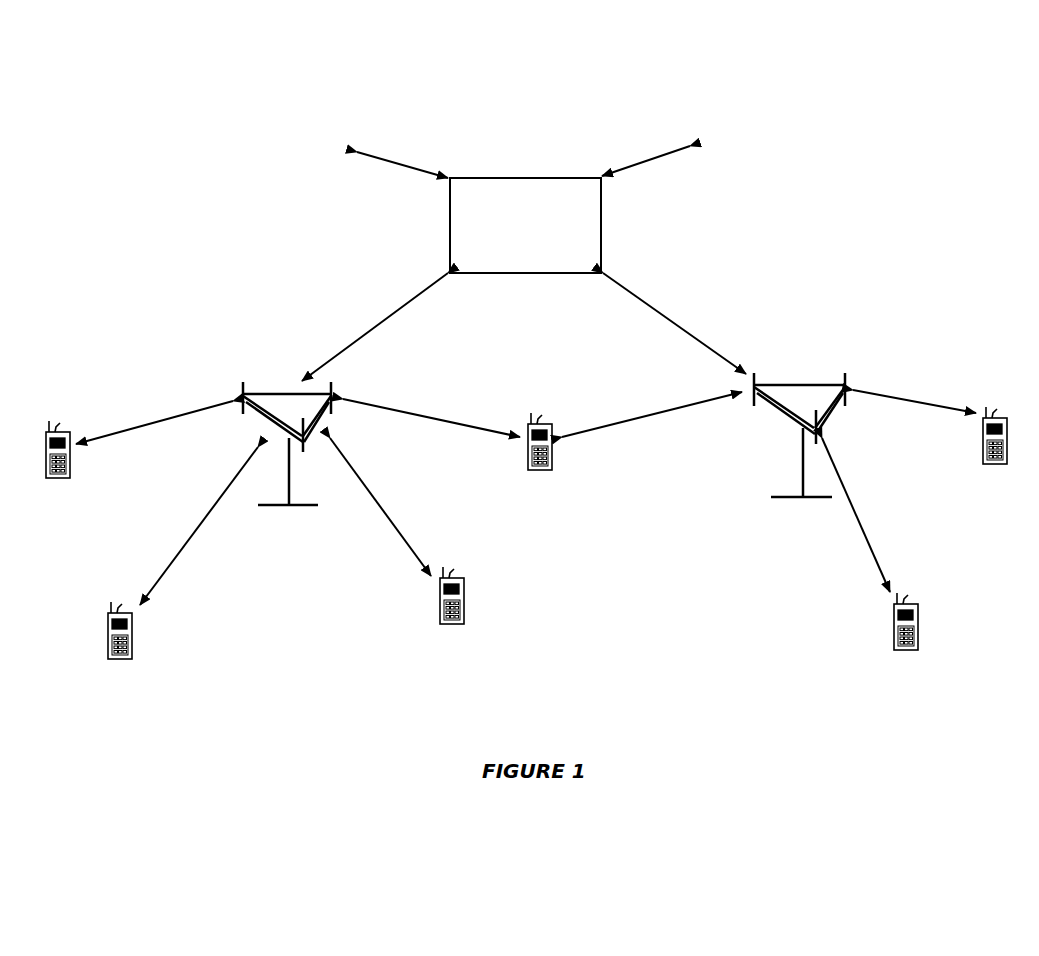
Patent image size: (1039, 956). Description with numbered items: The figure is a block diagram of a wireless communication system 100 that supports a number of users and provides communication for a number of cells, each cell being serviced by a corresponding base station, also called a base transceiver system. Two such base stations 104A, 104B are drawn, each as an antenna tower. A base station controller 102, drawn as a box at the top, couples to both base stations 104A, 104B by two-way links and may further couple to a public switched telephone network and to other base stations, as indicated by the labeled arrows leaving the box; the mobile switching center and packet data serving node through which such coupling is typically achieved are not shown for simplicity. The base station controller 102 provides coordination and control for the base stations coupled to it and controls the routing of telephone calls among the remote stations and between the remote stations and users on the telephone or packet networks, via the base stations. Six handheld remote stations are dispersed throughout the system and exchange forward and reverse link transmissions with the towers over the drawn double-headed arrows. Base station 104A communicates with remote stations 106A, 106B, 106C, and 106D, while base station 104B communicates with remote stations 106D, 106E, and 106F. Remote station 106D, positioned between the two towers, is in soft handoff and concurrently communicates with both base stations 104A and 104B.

The wireless communication system 100 is at (924, 92).
The base station controller 102 is at (519, 177).
The base station 104A is at (277, 392).
The base station 104B is at (811, 384).
The remote station 106A is at (60, 439).
The remote station 106B is at (108, 621).
The remote station 106C is at (456, 587).
The remote station 106D is at (544, 432).
The remote station 106E is at (909, 610).
The remote station 106F is at (1002, 426).